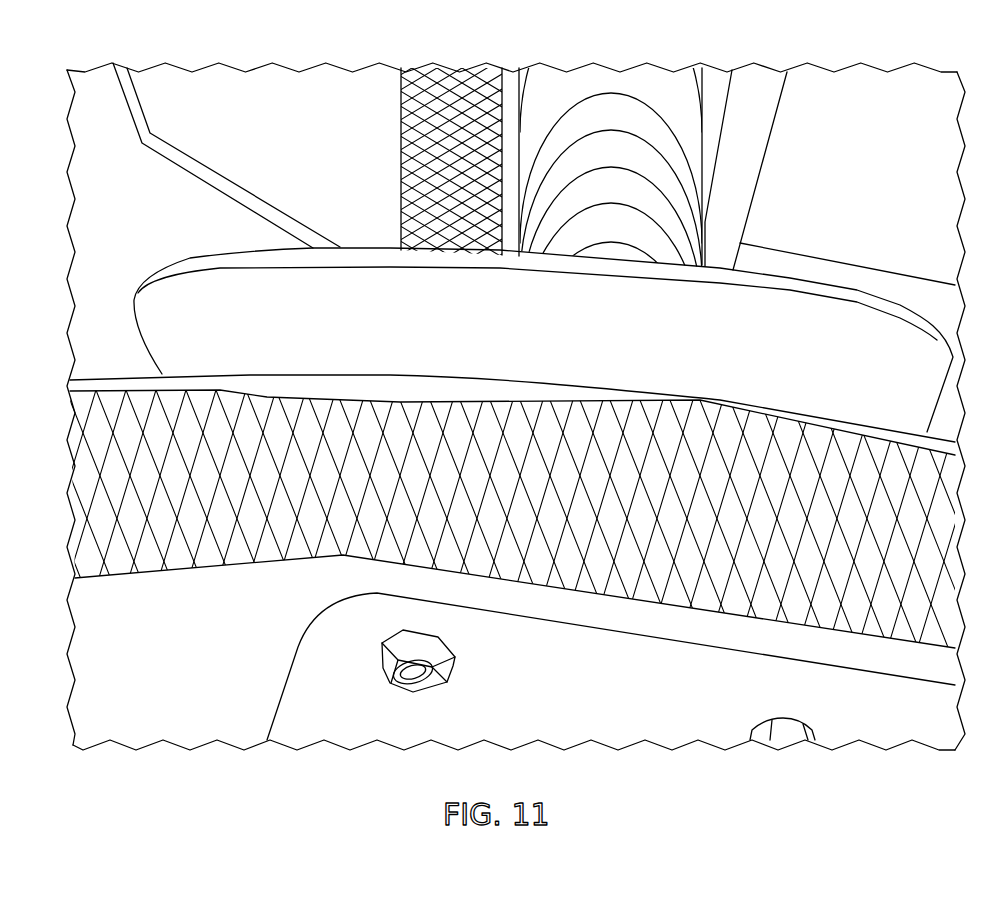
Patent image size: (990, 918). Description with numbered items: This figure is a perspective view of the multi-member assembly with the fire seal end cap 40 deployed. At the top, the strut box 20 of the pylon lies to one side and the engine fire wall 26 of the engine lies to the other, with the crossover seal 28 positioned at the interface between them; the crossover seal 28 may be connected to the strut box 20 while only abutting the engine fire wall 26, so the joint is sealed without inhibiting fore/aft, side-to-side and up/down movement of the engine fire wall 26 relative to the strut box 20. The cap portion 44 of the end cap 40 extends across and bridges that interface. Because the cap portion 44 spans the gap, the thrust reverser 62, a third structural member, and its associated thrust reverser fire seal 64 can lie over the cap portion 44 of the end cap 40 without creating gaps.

The strut box 20 is at (880, 80).
The engine fire wall 26 is at (283, 82).
The crossover seal 28 is at (601, 82).
The end cap 40 is at (822, 310).
The cap portion 44 is at (548, 338).
The thrust reverser 62 is at (591, 698).
The thrust reverser fire seal 64 is at (642, 445).